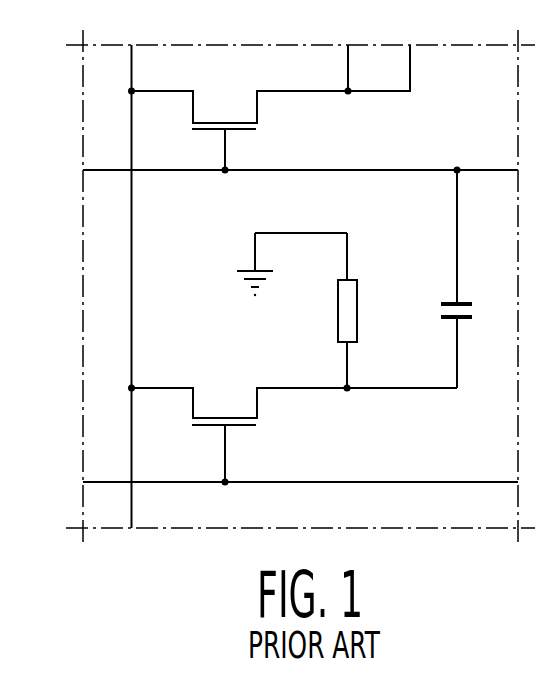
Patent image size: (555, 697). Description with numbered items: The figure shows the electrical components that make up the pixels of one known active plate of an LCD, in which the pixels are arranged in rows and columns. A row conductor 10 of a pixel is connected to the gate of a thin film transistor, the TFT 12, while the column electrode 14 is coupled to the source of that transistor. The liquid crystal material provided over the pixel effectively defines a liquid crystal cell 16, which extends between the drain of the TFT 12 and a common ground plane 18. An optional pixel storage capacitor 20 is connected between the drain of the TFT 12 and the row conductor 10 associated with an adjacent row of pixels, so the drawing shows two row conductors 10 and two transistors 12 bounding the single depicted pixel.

The row conductor 10 is at (102, 170).
The TFT 12 is at (229, 83).
The column electrode 14 is at (131, 285).
The liquid crystal cell 16 is at (338, 313).
The common ground plane 18 is at (240, 275).
The pixel storage capacitor 20 is at (440, 308).